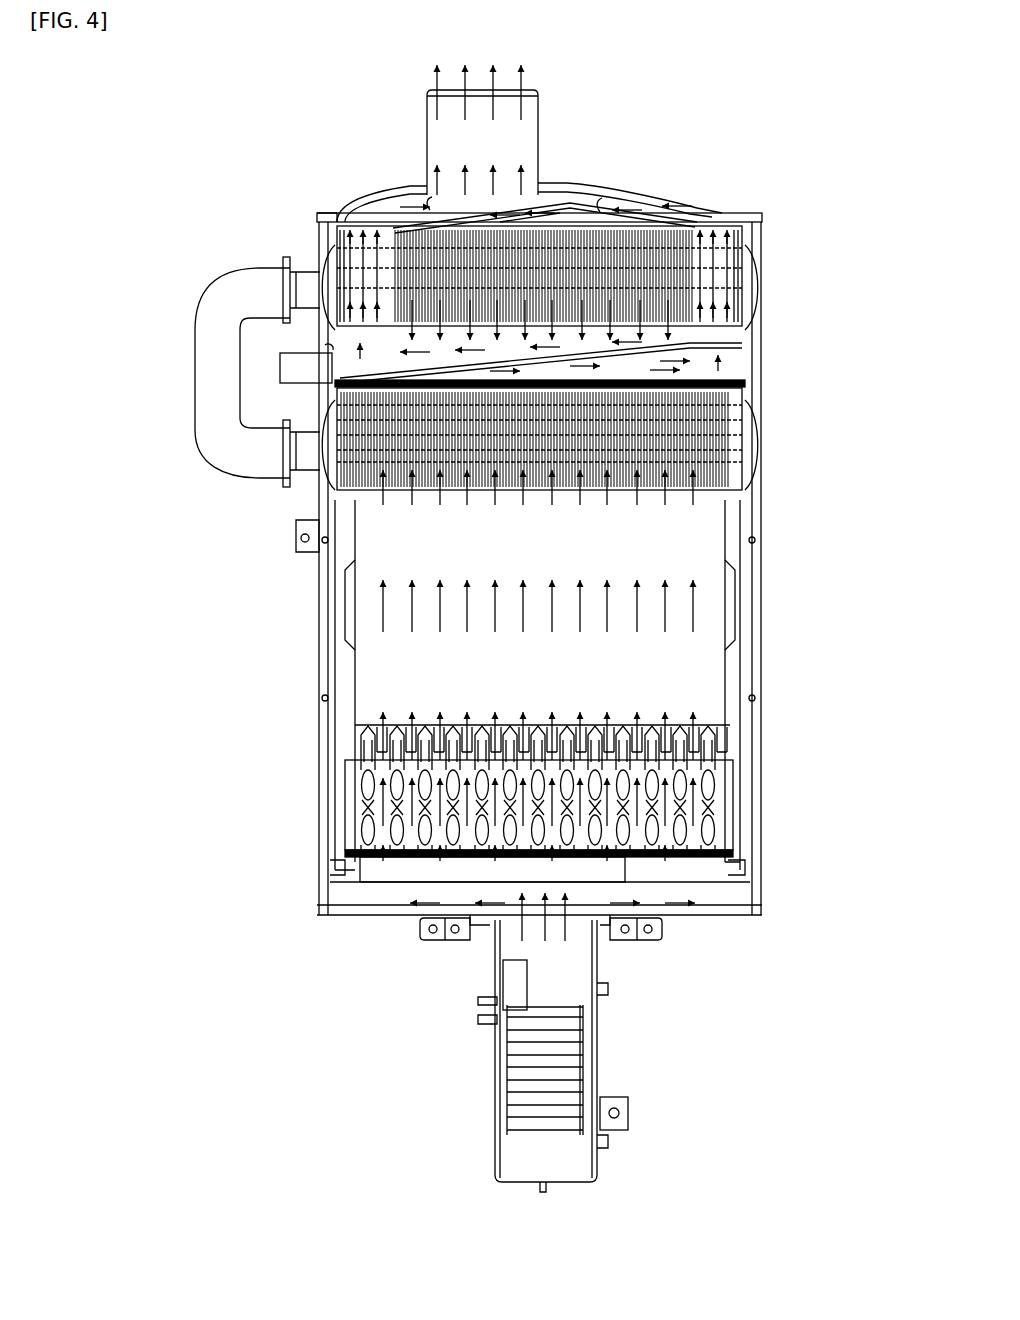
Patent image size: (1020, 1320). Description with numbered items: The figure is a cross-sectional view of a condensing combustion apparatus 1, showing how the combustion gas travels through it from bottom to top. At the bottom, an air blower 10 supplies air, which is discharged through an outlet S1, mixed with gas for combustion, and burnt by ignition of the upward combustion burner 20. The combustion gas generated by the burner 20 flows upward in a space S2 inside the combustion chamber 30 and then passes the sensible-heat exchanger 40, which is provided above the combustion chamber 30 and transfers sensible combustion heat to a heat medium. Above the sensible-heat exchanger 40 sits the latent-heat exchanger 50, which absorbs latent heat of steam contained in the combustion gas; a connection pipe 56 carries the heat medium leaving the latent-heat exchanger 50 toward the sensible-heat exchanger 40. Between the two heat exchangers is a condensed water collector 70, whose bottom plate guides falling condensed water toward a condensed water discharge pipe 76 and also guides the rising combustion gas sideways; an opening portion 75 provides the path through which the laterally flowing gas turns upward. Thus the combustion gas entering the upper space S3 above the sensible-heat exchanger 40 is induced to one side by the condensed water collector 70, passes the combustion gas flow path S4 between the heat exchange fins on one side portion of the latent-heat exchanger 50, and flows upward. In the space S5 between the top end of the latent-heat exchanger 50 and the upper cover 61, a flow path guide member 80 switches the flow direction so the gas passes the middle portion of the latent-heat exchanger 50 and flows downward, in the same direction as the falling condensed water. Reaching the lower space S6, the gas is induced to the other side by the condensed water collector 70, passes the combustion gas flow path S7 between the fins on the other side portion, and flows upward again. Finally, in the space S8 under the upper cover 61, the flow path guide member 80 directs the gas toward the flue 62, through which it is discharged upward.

The condensing combustion apparatus 1 is at (275, 122).
The air blower 10 is at (486, 1068).
The upward combustion burner 20 is at (355, 808).
The combustion chamber 30 is at (540, 566).
The sensible-heat exchanger 40 is at (428, 500).
The latent-heat exchanger 50 is at (333, 378).
The connection pipe 56 is at (200, 342).
The upper cover 61 is at (650, 200).
The flue 62 is at (540, 110).
The condensed water collector 70 is at (705, 350).
The opening portion 75 is at (705, 362).
The condensed water discharge pipe 76 is at (278, 367).
The flow path guide member 80 is at (548, 207).
The outlet S1 is at (552, 948).
The space S2 is at (522, 665).
The upper space S3 is at (660, 370).
The combustion gas flow path S4 is at (714, 276).
The space S5 is at (598, 212).
The lower space S6 is at (357, 292).
The combustion gas flow path S7 is at (362, 260).
The space S8 is at (430, 210).